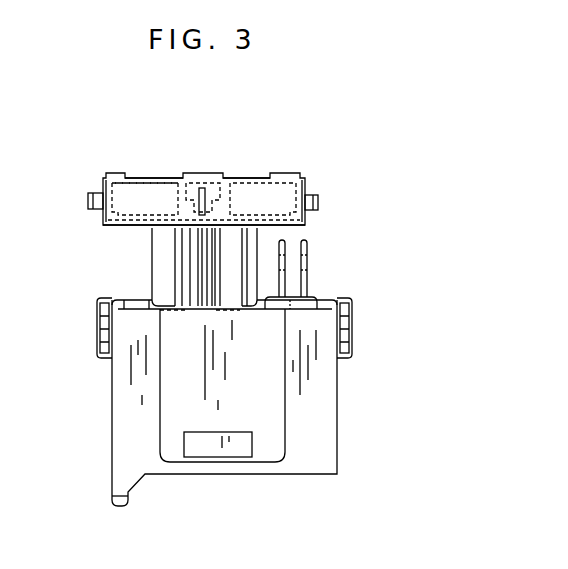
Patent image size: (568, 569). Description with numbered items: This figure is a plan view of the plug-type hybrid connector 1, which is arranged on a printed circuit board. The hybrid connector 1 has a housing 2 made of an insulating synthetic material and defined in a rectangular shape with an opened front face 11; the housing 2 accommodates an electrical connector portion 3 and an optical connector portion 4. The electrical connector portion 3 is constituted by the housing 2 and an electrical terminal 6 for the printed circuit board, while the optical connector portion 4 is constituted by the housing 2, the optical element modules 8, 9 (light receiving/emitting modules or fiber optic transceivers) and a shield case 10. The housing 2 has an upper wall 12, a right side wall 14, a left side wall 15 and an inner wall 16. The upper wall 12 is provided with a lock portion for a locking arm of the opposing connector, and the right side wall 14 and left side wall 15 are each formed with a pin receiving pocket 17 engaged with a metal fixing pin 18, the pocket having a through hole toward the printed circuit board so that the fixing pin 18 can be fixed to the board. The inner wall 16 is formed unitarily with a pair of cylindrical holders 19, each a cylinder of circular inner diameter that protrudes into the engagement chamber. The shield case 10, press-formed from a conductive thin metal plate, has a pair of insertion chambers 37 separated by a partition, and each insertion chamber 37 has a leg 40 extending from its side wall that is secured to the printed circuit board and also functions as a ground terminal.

The hybrid connector 1 is at (285, 148).
The housing 2 is at (110, 478).
The electrical connector portion 3 is at (335, 283).
The optical connector portion 4 is at (76, 196).
The electrical terminal 6 is at (285, 256).
The optical element module 8 is at (272, 178).
The optical element module 9 is at (150, 176).
The shield case 10 is at (105, 225).
The opened front face 11 is at (315, 476).
The upper wall 12 is at (128, 412).
The right side wall 14 is at (337, 418).
The left side wall 15 is at (112, 378).
The inner wall 16 is at (178, 306).
The pin receiving pocket 17 is at (97, 306).
The fixing pin 18 is at (105, 333).
The cylindrical holder 19 is at (152, 240).
The insertion chamber 37 is at (170, 178).
The leg 40 is at (88, 200).